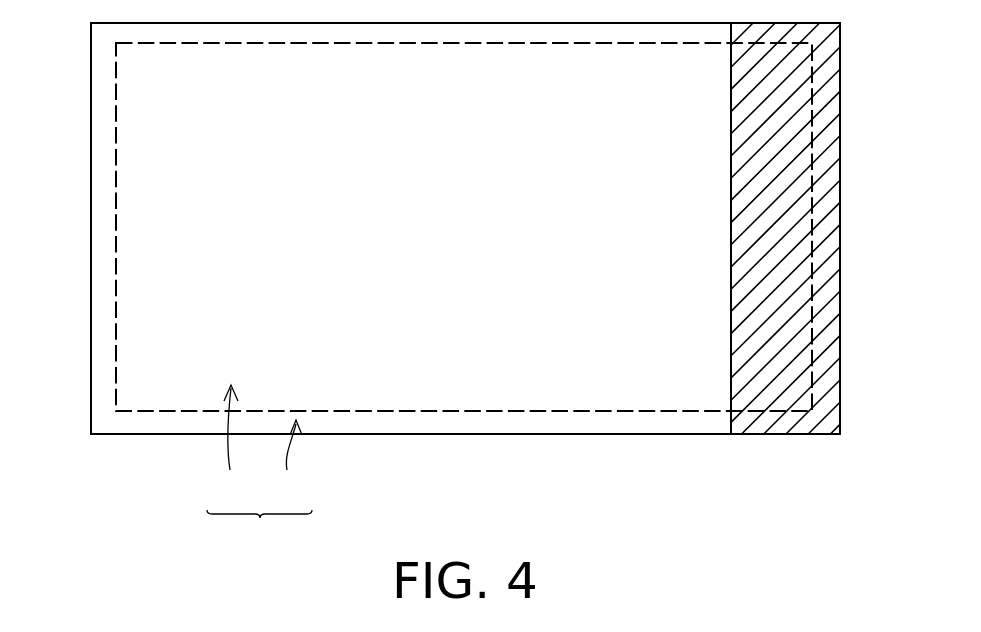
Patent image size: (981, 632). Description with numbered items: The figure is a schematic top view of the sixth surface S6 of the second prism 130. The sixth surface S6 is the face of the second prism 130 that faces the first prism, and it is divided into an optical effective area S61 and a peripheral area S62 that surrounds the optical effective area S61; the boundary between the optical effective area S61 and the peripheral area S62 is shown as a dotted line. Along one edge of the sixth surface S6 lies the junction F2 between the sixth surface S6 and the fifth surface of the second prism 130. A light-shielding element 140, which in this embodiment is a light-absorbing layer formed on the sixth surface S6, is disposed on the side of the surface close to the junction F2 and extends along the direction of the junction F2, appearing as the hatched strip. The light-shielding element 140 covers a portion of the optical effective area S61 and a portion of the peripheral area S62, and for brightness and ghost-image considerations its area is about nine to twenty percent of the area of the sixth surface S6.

The second prism 130 is at (91, 227).
The light-shielding element 140 is at (792, 168).
The junction F2 is at (846, 219).
The optical effective area S61 is at (227, 448).
The peripheral area S62 is at (284, 466).
The sixth surface S6 is at (259, 531).